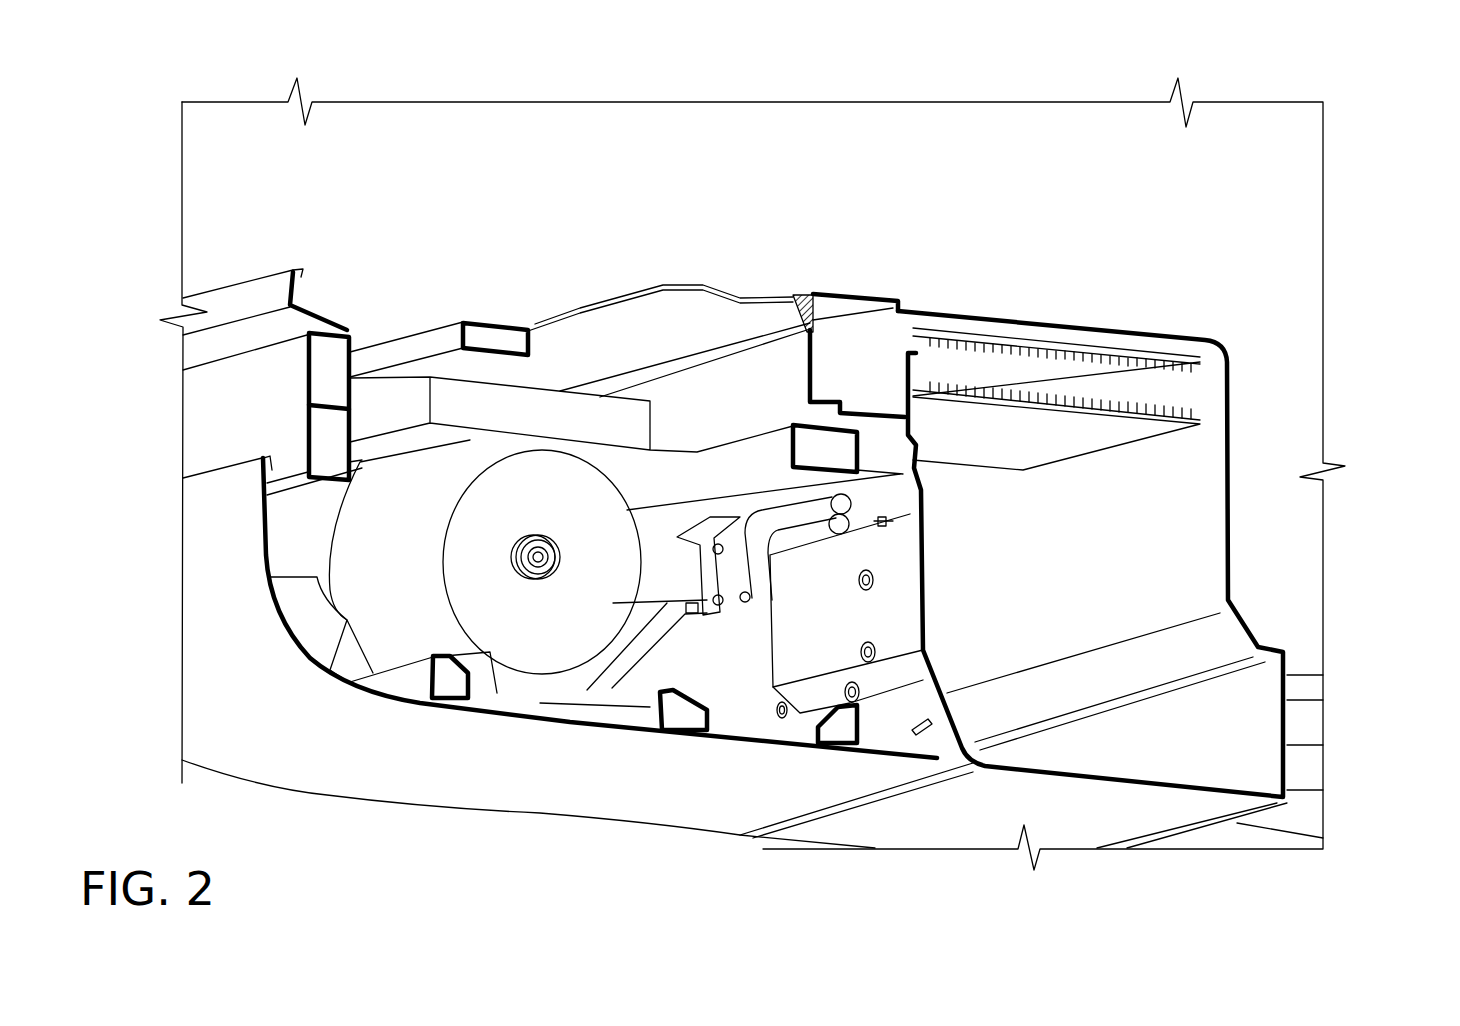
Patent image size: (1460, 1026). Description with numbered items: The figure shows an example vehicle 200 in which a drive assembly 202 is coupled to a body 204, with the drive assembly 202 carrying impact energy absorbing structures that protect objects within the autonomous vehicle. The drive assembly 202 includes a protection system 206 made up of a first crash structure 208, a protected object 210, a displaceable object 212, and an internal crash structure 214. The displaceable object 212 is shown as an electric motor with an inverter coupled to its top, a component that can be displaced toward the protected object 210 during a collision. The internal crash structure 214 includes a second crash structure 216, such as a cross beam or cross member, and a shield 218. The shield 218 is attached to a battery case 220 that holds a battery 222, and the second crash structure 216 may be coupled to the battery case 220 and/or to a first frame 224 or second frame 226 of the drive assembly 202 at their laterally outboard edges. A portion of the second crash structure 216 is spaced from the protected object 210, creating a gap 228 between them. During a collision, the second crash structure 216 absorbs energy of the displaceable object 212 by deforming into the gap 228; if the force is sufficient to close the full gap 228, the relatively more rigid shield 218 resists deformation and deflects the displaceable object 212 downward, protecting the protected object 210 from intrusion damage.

The vehicle 200 is at (297, 62).
The drive assembly 202 is at (297, 185).
The body 204 is at (1375, 630).
The protection system 206 is at (535, 875).
The first crash structure 208 is at (349, 328).
The protected object 210 is at (877, 248).
The displaceable object 212 is at (595, 622).
The internal crash structure 214 is at (692, 850).
The second crash structure 216 is at (828, 492).
The shield 218 is at (898, 693).
The battery case 220 is at (908, 417).
The battery 222 is at (1040, 357).
The first frame 224 is at (813, 513).
The second frame 226 is at (410, 688).
The gap 228 is at (815, 570).